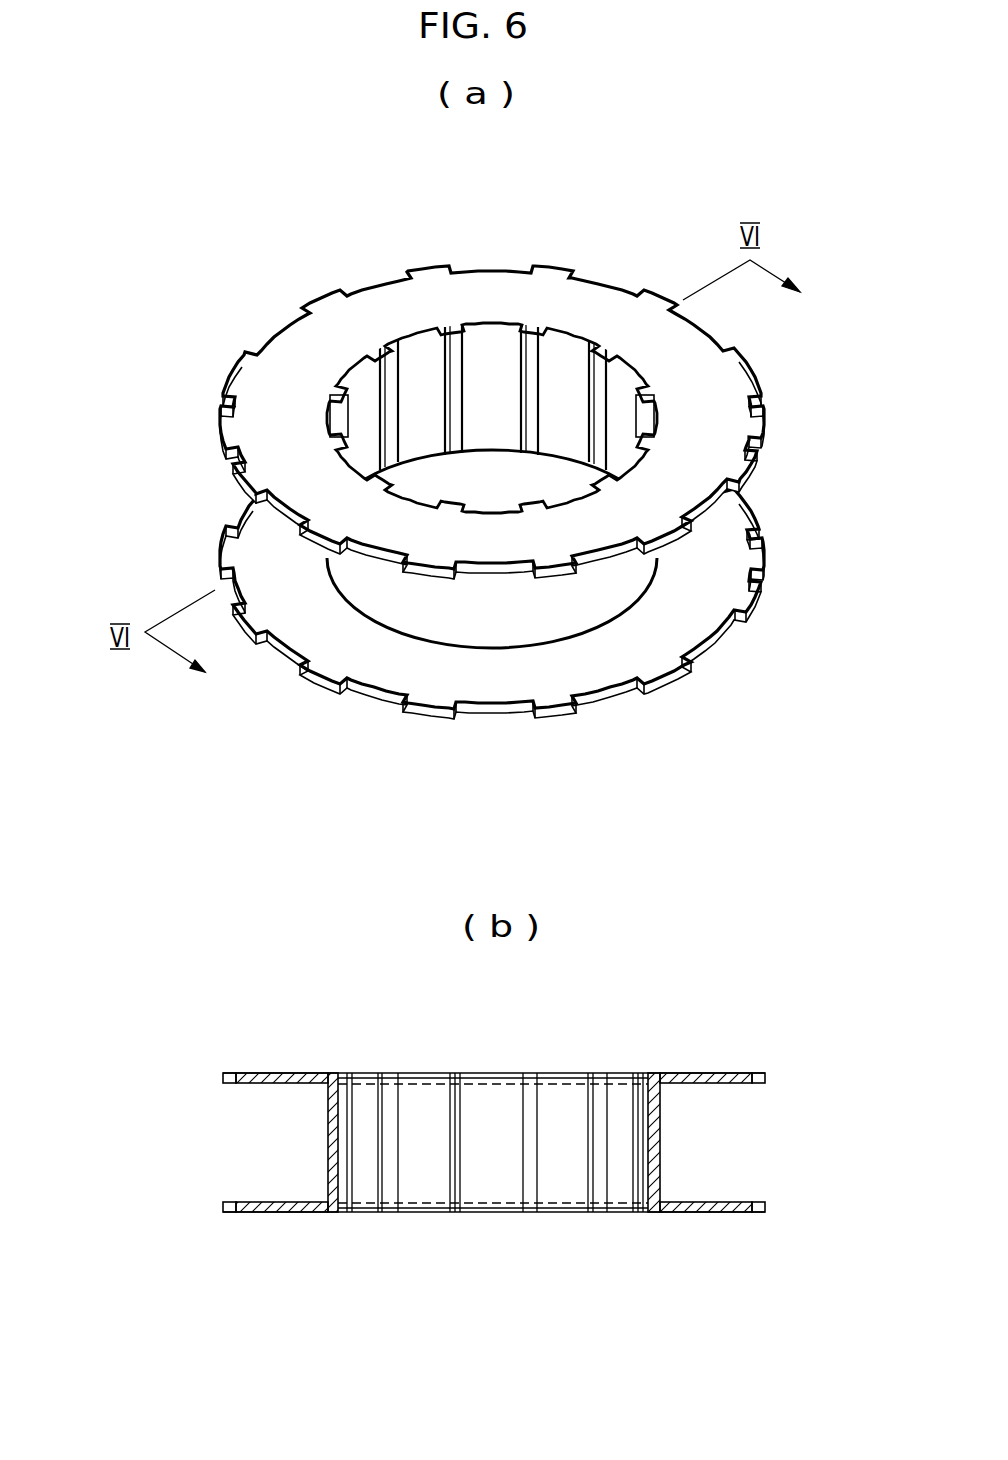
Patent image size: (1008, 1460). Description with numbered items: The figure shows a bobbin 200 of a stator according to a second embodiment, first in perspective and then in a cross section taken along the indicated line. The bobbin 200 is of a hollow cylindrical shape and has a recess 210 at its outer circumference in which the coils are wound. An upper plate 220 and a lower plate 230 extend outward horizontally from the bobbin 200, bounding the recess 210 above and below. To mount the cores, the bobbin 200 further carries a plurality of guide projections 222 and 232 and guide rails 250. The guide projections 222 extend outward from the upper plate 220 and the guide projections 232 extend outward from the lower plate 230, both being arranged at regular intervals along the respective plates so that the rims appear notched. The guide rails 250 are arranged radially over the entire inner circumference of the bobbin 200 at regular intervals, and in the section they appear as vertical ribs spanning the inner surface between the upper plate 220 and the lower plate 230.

The bobbin 200 is at (492, 754).
The recess 210 is at (517, 636).
The upper plate 220 is at (492, 683).
The guide projections 222 is at (747, 463).
The lower plate 230 is at (455, 899).
The guide projections 232 is at (747, 607).
The guide rails 250 is at (521, 328).